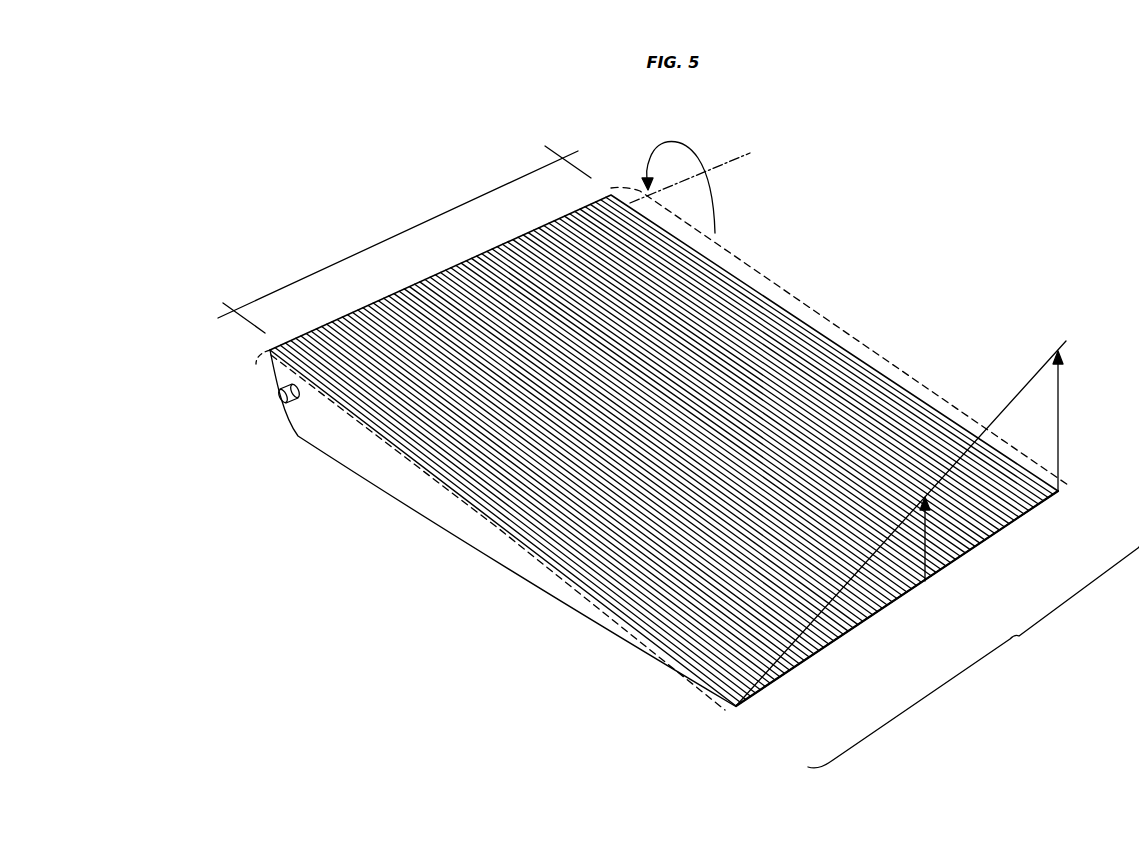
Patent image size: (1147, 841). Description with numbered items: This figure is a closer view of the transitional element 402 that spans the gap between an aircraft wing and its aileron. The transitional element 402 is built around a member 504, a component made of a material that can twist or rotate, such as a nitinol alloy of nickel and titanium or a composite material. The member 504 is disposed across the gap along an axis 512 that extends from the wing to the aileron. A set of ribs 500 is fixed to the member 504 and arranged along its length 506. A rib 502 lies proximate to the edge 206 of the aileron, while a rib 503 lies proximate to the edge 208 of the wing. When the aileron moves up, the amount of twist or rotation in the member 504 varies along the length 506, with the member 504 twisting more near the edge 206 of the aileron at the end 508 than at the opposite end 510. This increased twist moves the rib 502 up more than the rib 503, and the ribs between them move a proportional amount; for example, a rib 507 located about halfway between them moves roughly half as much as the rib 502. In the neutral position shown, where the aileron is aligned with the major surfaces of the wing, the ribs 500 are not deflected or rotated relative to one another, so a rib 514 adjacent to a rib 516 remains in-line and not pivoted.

The transitional element 402 is at (876, 236).
The edge of aileron 206 is at (816, 310).
The edge of wing 208 is at (418, 462).
The ribs 500 is at (973, 650).
The rib 502 is at (1051, 484).
The rib 503 is at (729, 698).
The member 504 is at (286, 395).
The length 506 is at (413, 213).
The rib 507 is at (917, 573).
The end 508 is at (602, 146).
The end 510 is at (226, 345).
The axis 512 is at (726, 143).
The rib 514 is at (974, 533).
The rib 516 is at (974, 534).